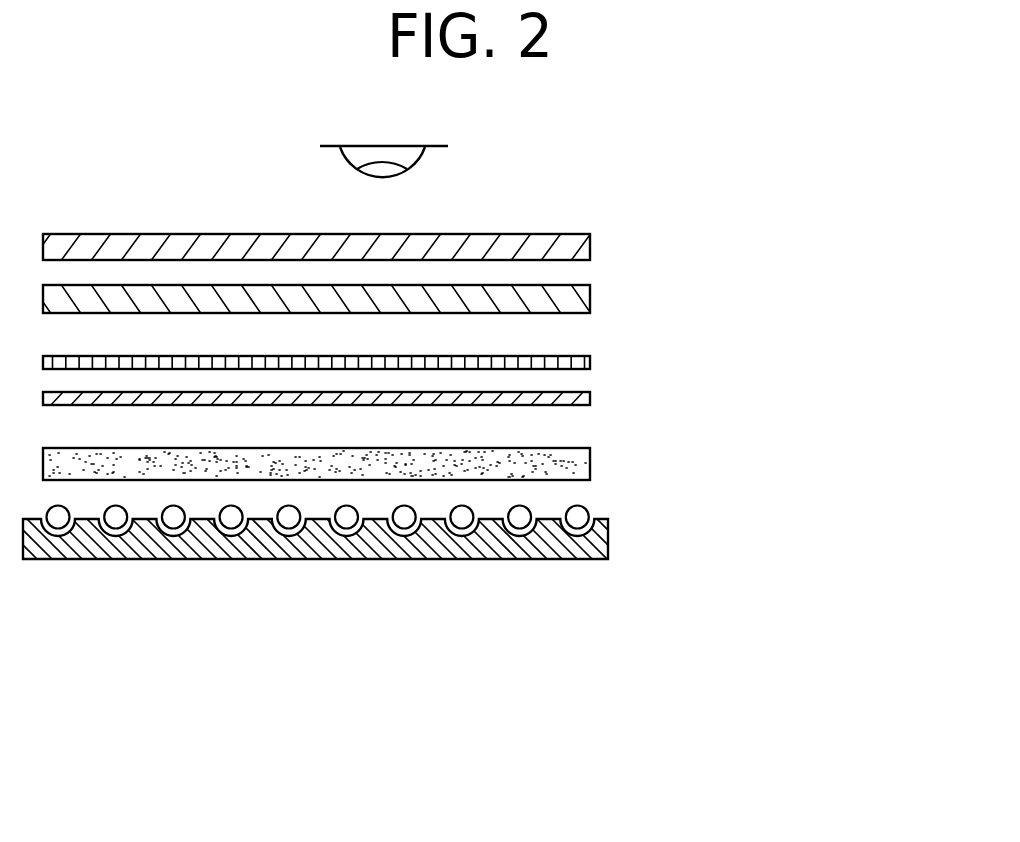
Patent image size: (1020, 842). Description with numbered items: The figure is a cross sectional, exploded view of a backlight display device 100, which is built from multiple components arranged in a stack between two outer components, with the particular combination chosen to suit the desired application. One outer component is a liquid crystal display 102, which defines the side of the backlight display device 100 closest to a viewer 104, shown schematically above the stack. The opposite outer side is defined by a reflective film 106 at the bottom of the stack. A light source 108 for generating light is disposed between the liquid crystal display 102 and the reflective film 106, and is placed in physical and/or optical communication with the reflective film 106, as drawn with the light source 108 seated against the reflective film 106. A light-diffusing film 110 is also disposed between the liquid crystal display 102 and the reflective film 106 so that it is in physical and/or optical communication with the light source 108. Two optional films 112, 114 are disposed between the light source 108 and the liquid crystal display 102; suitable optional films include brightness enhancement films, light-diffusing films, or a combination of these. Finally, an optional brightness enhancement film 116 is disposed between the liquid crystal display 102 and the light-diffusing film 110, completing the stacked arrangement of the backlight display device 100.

The backlight display device 100 is at (823, 238).
The liquid crystal display 102 is at (592, 237).
The viewer 104 is at (433, 144).
The reflective film 106 is at (608, 535).
The light source 108 is at (577, 518).
The light-diffusing film 110 is at (590, 455).
The optional film 112 is at (590, 358).
The optional film 114 is at (590, 393).
The brightness enhancement film 116 is at (592, 293).